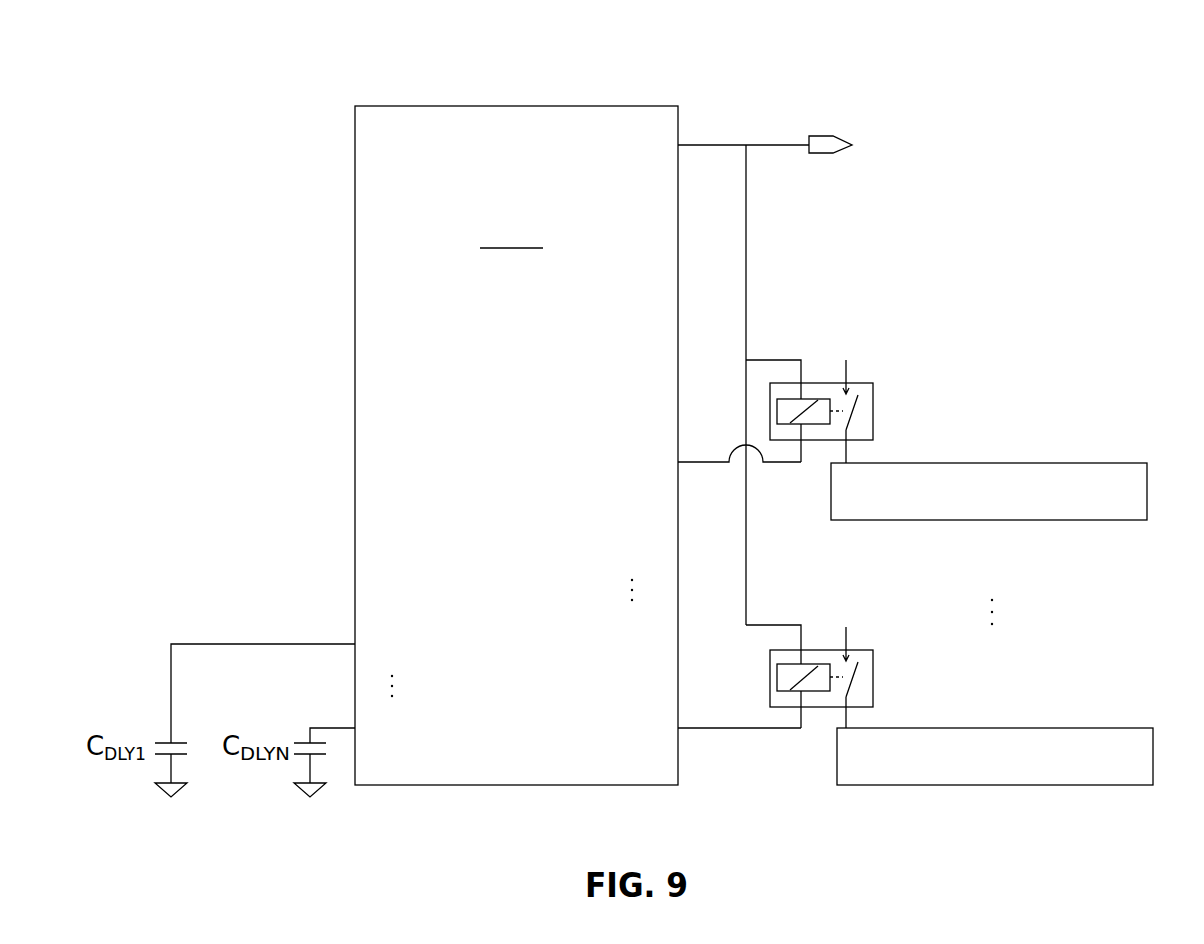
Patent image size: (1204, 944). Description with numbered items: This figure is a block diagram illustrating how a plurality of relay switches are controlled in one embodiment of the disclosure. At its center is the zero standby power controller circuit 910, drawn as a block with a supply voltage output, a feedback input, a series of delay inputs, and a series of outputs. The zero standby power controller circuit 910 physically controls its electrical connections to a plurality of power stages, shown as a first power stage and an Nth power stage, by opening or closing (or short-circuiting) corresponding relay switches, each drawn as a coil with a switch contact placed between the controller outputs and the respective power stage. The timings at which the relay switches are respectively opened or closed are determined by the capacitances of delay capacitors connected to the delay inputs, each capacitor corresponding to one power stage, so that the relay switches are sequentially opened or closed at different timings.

The zero standby power controller circuit 910 is at (527, 106).